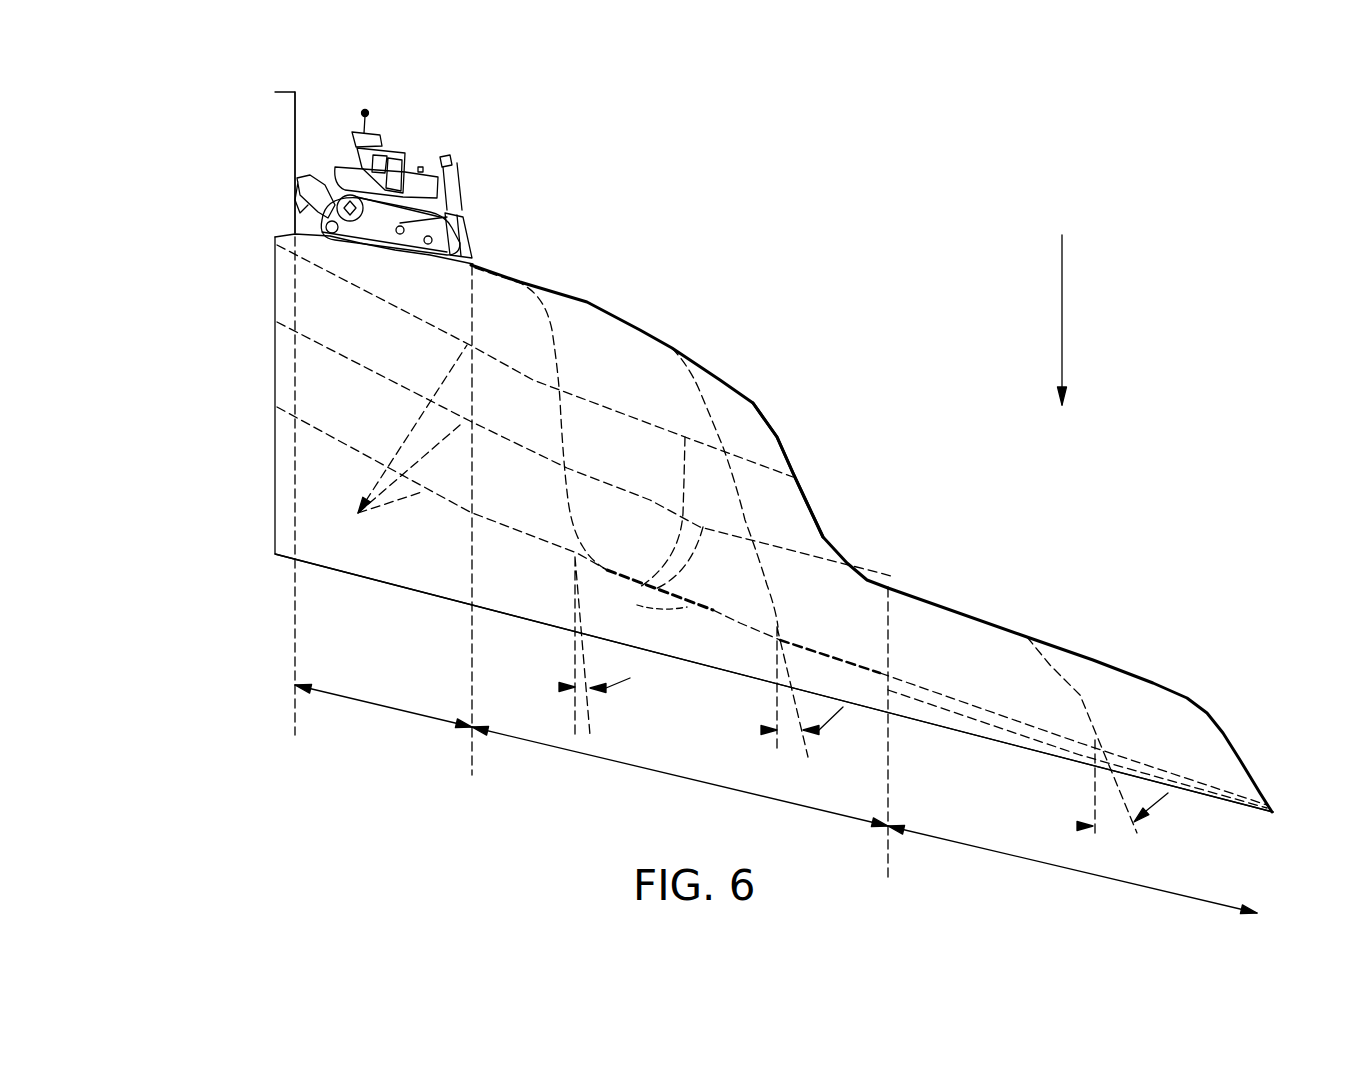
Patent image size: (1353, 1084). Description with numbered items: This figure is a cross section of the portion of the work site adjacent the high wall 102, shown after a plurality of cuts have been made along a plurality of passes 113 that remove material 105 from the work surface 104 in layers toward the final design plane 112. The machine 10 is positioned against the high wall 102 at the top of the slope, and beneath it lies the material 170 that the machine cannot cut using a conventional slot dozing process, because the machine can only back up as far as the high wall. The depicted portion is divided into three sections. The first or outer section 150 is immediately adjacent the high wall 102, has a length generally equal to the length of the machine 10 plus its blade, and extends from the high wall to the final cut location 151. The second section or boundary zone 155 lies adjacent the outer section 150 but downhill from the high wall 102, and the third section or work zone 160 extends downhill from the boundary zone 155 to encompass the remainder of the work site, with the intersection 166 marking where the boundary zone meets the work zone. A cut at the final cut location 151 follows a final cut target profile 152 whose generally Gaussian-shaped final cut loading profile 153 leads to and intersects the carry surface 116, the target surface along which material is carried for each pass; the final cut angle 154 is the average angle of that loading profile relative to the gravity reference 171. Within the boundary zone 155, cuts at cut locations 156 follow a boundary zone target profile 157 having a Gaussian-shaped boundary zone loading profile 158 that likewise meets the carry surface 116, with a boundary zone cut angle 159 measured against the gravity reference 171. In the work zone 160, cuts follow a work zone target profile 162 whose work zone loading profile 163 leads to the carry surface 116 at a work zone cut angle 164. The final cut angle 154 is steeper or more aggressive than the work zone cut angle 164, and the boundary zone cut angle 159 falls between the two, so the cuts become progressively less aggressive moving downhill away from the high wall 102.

The machine 10 is at (400, 157).
The high wall 102 is at (295, 132).
The work surface 104 is at (587, 302).
The material 105 is at (737, 425).
The final design plane 112 is at (373, 577).
The passes 113 is at (772, 526).
The carry surface 116 is at (477, 245).
The outer section 150 is at (403, 715).
The final cut location 151 is at (476, 265).
The final cut target profile 152 is at (565, 545).
The final cut loading profile 153 is at (560, 447).
The final cut angle 154 is at (560, 687).
The boundary zone 155 is at (655, 773).
The cut locations 156 is at (673, 358).
The boundary zone target profile 157 is at (860, 577).
The boundary zone loading profile 158 is at (740, 497).
The boundary zone cut angle 159 is at (761, 730).
The work zone 160 is at (1073, 868).
The work zone target profile 162 is at (1098, 755).
The work zone loading profile 163 is at (1076, 705).
The work zone cut angle 164 is at (1077, 826).
The intersection 166 is at (893, 587).
The material 170 is at (393, 275).
The gravity reference 171 is at (1062, 320).